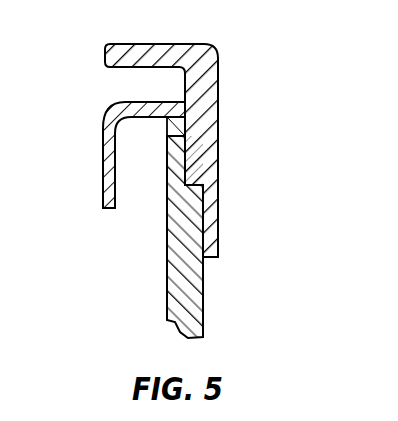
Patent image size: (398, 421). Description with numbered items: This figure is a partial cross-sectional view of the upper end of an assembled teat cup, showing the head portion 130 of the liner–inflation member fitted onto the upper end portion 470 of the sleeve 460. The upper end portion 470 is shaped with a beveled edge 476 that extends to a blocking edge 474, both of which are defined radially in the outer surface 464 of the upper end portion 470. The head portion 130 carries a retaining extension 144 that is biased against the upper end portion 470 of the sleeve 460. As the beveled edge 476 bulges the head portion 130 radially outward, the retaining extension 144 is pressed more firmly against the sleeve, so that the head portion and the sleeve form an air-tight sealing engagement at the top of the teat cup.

The head portion 130 is at (245, 52).
The retaining extension 144 is at (203, 106).
The blocking edge 474 is at (207, 176).
The beveled edge 476 is at (200, 155).
The outer surface 464 is at (165, 133).
The upper end portion 470 is at (154, 210).
The sleeve 460 is at (203, 300).